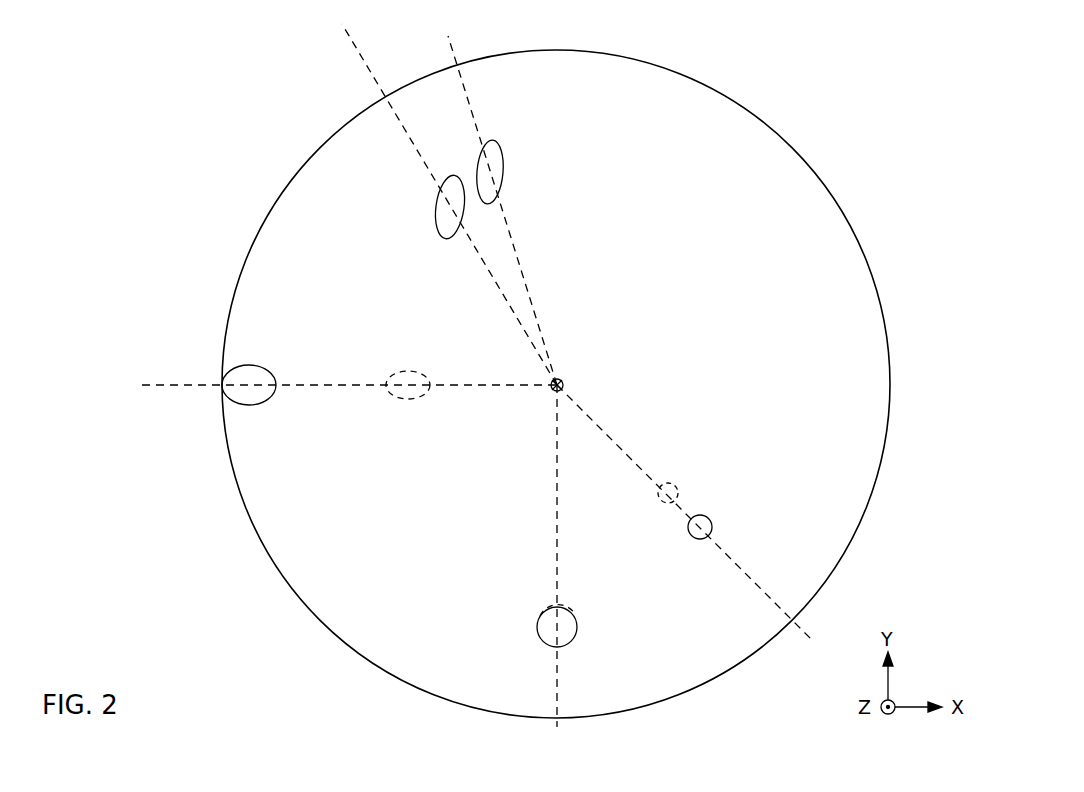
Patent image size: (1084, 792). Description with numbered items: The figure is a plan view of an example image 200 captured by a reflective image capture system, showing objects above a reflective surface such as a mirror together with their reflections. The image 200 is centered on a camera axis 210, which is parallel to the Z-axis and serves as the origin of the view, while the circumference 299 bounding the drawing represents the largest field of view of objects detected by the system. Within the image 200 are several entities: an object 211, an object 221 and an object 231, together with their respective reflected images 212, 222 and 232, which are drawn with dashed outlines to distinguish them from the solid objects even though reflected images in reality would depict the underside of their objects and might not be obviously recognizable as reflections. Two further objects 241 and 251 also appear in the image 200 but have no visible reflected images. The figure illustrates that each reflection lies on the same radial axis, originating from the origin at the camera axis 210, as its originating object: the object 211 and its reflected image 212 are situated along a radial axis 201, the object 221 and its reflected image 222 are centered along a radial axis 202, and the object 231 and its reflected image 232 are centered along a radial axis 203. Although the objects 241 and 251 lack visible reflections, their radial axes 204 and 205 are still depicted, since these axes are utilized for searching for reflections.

The image 200 is at (848, 100).
The radial axis 201 is at (180, 384).
The radial axis 202 is at (807, 635).
The radial axis 203 is at (555, 712).
The radial axis 204 is at (447, 36).
The radial axis 205 is at (350, 45).
The camera axis 210 is at (560, 382).
The object 211 is at (243, 366).
The reflected image 212 is at (411, 372).
The object 221 is at (701, 518).
The reflected image 222 is at (665, 488).
The object 231 is at (558, 646).
The reflected image 232 is at (557, 602).
The object 241 is at (503, 170).
The object 251 is at (440, 206).
The circumference 299 is at (264, 543).